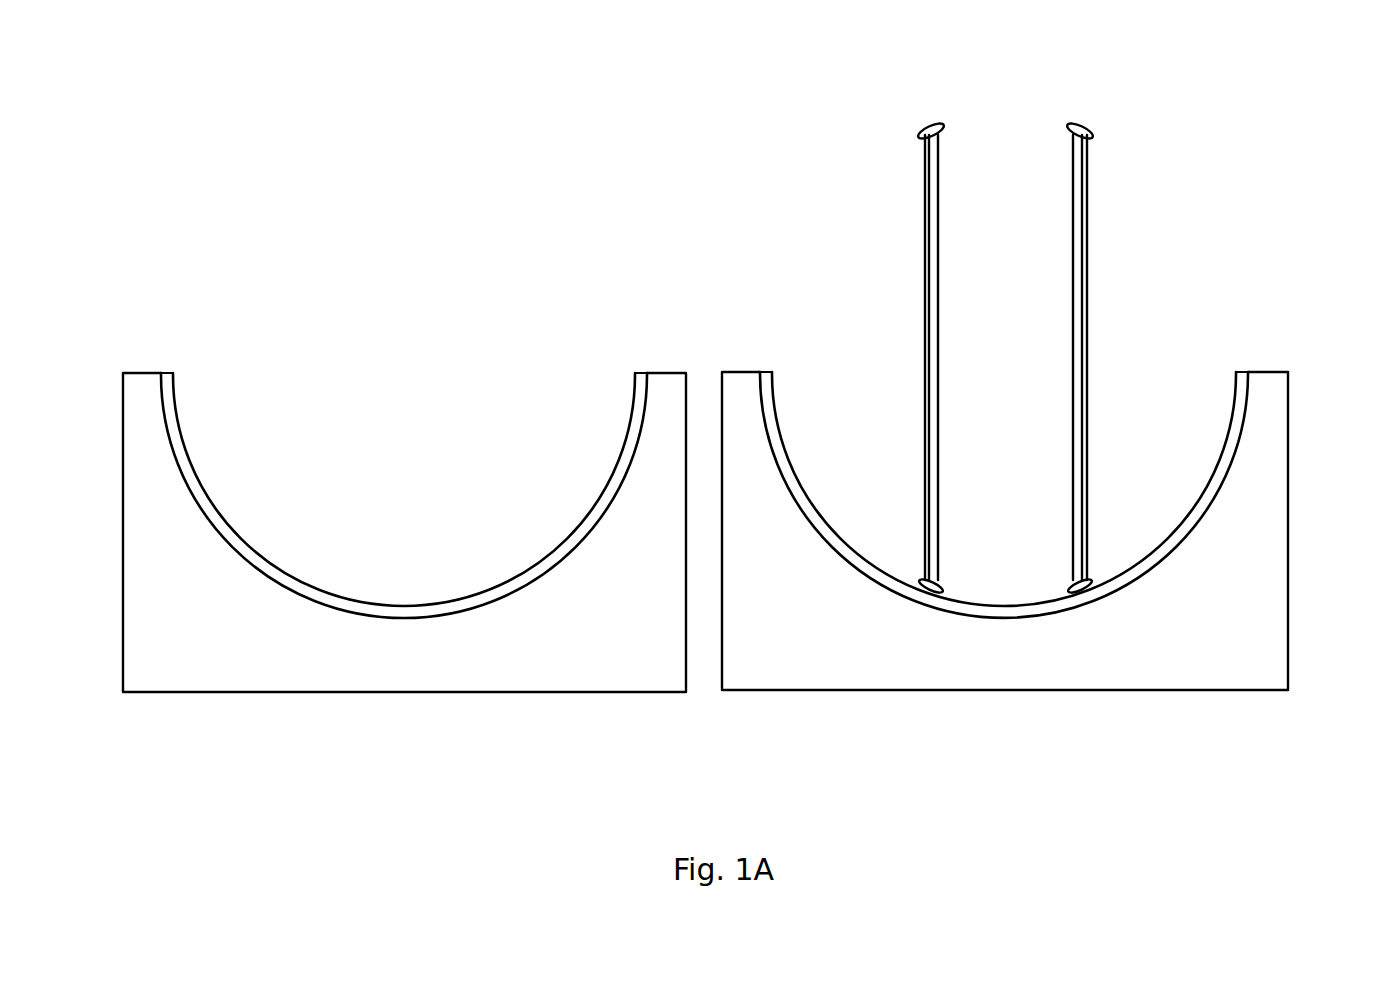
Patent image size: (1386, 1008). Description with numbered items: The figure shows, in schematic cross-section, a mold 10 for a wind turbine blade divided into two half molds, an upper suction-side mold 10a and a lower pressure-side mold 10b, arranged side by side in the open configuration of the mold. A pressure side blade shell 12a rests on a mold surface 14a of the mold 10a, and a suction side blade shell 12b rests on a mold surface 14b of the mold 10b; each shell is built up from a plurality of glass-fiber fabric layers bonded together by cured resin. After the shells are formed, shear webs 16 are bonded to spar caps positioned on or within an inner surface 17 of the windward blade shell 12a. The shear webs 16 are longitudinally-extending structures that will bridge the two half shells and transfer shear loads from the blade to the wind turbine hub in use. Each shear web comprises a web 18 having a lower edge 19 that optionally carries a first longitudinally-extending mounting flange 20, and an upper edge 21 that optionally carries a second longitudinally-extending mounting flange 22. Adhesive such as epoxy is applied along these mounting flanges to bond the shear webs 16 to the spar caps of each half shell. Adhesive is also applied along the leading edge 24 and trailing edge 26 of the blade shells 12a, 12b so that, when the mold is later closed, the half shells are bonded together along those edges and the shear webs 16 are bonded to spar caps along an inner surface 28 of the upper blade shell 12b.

The mold 10 is at (683, 206).
The upper suction-side mold 10a is at (1270, 660).
The lower pressure-side mold 10b is at (136, 664).
The pressure side blade shell 12a is at (1238, 428).
The suction side blade shell 12b is at (546, 564).
The mold surface 14a is at (776, 442).
The mold surface 14b is at (174, 452).
The shear webs 16 is at (1066, 308).
The inner surface 17 is at (1192, 508).
The web 18 is at (926, 240).
The lower edge 19 is at (1064, 578).
The first longitudinally-extending mounting flange 20 is at (914, 580).
The upper edge 21 is at (1064, 114).
The second longitudinally-extending mounting flange 22 is at (926, 126).
The leading edge 24 is at (634, 374).
The trailing edge 26 is at (166, 374).
The inner surface 28 is at (280, 566).